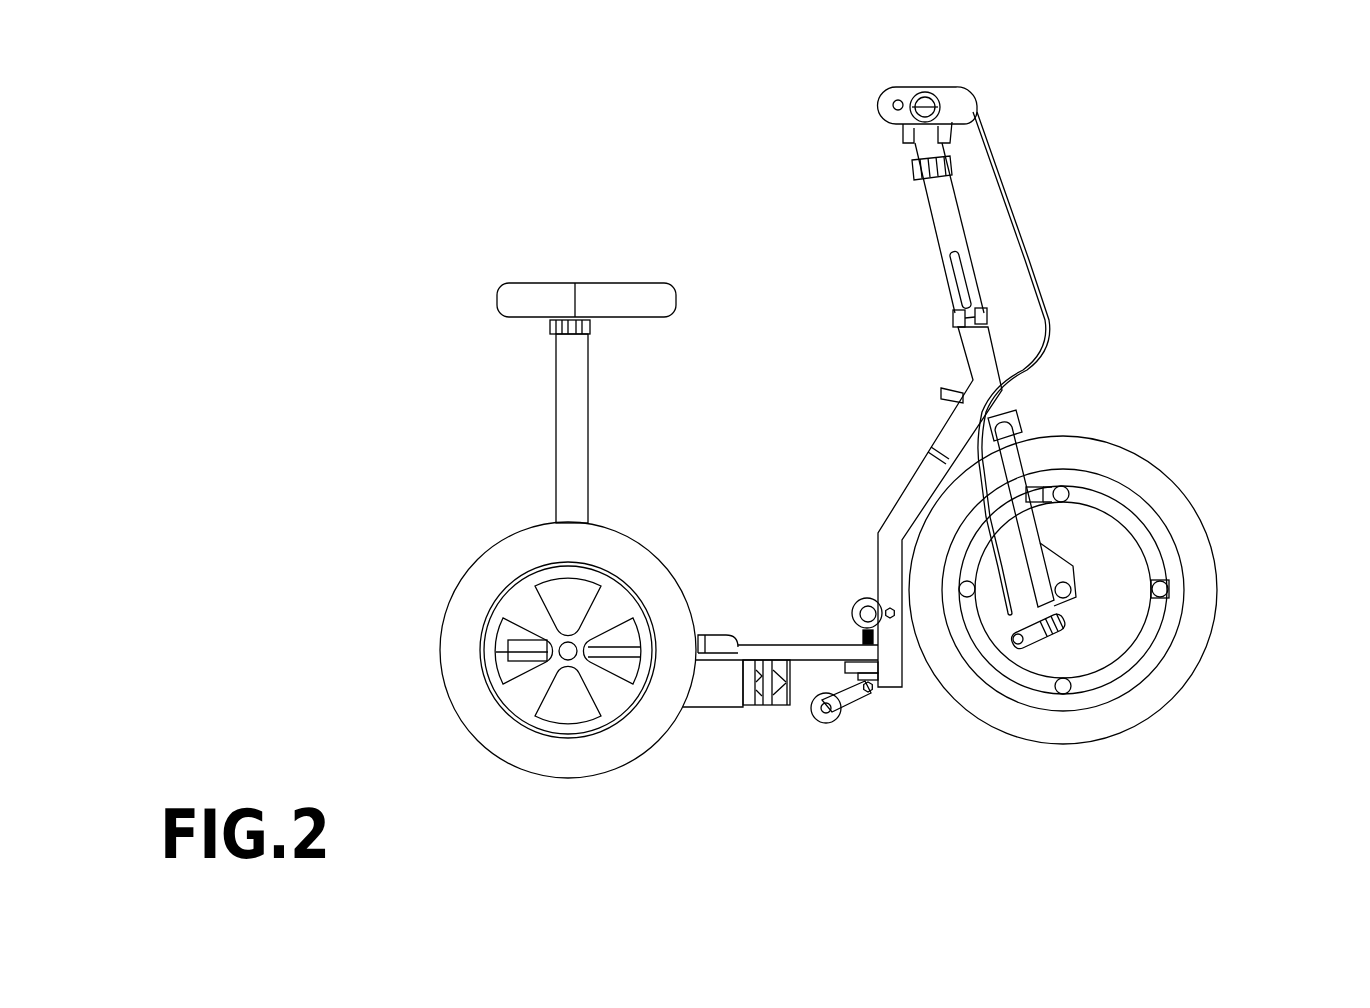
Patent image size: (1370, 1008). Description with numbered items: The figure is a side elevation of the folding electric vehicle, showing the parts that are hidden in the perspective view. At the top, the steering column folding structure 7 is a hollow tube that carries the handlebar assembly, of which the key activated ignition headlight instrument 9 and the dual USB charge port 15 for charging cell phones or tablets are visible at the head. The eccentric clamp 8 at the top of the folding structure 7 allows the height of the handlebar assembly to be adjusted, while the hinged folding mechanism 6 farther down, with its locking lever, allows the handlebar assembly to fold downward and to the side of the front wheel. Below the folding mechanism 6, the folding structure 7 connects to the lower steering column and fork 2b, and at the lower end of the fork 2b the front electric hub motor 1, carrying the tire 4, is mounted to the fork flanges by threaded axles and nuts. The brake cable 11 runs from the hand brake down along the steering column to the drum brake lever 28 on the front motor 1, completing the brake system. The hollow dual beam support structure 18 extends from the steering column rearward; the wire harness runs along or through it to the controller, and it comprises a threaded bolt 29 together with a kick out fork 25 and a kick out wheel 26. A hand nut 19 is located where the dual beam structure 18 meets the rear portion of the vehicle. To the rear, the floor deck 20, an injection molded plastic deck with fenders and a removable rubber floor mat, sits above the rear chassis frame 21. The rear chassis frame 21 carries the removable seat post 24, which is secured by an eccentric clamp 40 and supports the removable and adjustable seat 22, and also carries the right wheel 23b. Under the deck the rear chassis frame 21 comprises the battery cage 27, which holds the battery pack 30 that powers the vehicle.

The front electric hub motor 1 is at (1125, 639).
The fork 2b is at (1128, 496).
The tire 4 is at (1126, 590).
The hinged folding mechanism 6 is at (915, 351).
The steering column folding structure 7 is at (890, 228).
The eccentric clamp 8 is at (839, 204).
The key activated ignition headlight instrument 9 is at (981, 69).
The brake cable 11 is at (1098, 363).
The dual USB charge port 15 is at (858, 156).
The hollow dual beam support structure 18 is at (926, 507).
The hand nut 19 is at (841, 547).
The floor deck 20 is at (787, 592).
The rear chassis frame 21 is at (780, 756).
The removable/adjustable seat 22 is at (536, 232).
The right wheel 23b is at (545, 683).
The removable seat post 24 is at (500, 420).
The kick out fork 25 is at (913, 755).
The kick out wheel 26 is at (903, 804).
The battery cage 27 is at (640, 773).
The drum brake lever 28 is at (1107, 733).
The threaded bolt 29 is at (940, 687).
The battery pack 30 is at (747, 641).
The eccentric clamp 40 is at (629, 372).